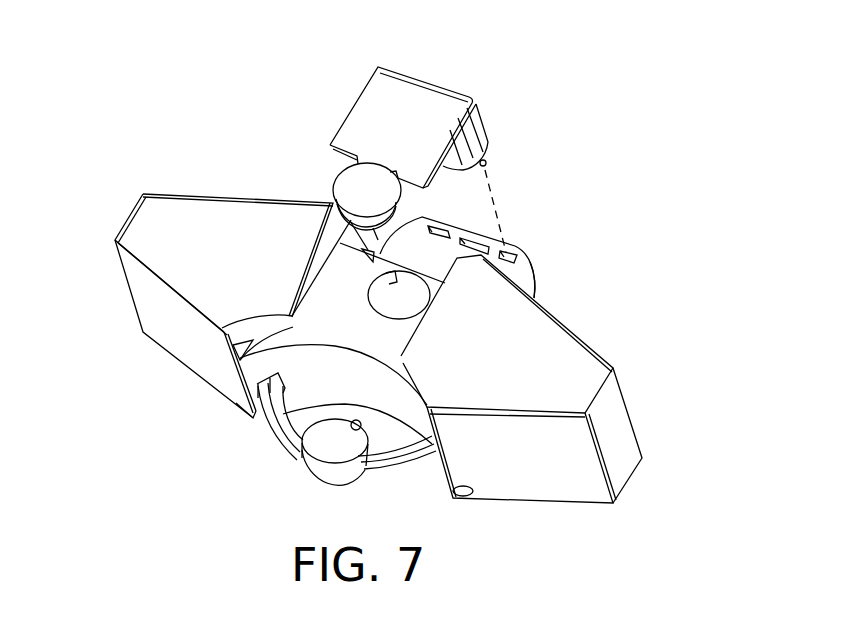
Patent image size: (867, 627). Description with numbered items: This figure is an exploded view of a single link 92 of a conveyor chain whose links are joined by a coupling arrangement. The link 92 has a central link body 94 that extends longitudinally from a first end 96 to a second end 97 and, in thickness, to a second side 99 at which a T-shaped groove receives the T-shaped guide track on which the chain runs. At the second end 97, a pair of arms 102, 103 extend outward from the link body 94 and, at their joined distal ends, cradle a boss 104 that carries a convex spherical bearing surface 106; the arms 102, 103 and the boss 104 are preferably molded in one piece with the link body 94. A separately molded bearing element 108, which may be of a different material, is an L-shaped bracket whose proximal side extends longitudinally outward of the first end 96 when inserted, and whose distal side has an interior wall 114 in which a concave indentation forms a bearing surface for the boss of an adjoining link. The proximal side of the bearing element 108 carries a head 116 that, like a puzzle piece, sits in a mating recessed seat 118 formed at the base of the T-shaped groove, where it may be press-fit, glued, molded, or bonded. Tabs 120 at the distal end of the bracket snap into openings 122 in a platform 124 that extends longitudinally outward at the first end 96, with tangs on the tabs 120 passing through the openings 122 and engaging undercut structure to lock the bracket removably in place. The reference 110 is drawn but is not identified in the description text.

The link 92 is at (598, 355).
The central link body 94 is at (300, 210).
The first end 96 is at (533, 297).
The second end 97 is at (482, 495).
The second side 99 is at (227, 205).
The arm 102 is at (390, 478).
The arm 103 is at (273, 436).
The boss 104 is at (317, 458).
The convex spherical bearing surface 106 is at (354, 425).
The bearing element 108 is at (429, 125).
The top surface of block 110 is at (360, 116).
The interior wall 114 is at (455, 152).
The head 116 is at (343, 187).
The recessed seat 118 is at (397, 304).
The tabs 120 is at (487, 160).
The openings 122 is at (510, 255).
The platform 124 is at (530, 262).